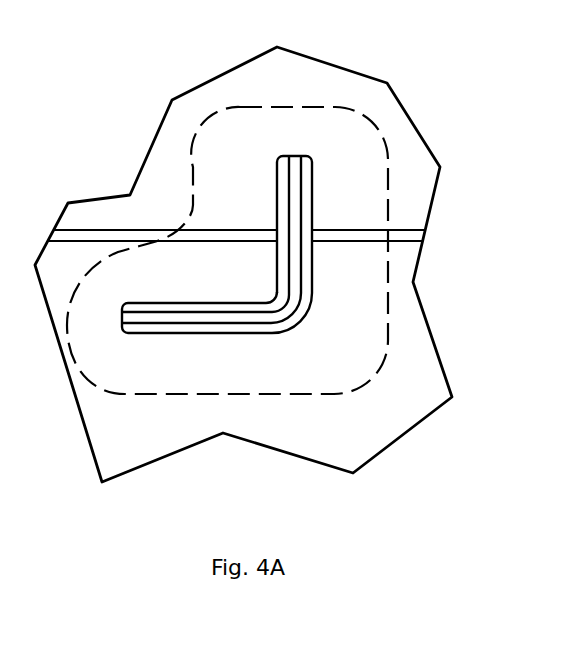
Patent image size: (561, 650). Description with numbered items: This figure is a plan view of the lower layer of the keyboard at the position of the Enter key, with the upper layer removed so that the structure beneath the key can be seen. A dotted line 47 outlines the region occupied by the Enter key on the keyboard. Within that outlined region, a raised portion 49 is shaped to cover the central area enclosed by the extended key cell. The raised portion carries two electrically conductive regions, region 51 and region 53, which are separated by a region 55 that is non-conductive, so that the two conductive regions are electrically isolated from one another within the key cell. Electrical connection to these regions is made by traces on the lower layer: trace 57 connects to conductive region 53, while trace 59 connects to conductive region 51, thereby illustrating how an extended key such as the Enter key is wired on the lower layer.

The dotted line 47 is at (325, 107).
The raised portion 49 is at (313, 193).
The conductive region 51 is at (162, 333).
The conductive region 53 is at (182, 304).
The non-conductive region 55 is at (227, 318).
The trace 57 is at (133, 240).
The trace 59 is at (400, 231).